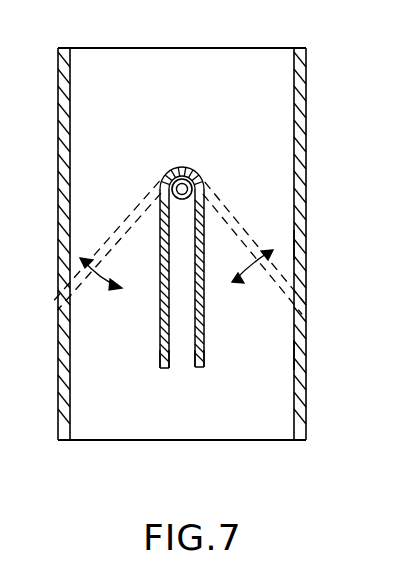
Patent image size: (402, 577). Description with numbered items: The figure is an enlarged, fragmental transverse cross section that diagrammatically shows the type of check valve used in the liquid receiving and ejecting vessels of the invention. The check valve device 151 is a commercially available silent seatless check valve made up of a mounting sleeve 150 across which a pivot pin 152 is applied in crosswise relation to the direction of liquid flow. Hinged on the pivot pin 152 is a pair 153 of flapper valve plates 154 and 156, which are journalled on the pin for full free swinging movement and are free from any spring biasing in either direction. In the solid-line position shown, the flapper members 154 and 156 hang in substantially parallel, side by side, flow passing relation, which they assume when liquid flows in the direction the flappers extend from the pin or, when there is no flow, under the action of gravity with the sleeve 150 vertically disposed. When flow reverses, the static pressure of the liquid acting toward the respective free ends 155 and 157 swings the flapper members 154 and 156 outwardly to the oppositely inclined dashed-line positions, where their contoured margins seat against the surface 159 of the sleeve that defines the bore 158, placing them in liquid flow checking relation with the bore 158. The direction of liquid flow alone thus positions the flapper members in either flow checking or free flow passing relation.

The mounting sleeve 150 is at (307, 158).
The check valve device 151 is at (338, 87).
The pivot pin 152 is at (190, 169).
The pair of flapper valve plates 153 is at (159, 406).
The flapper valve plate 154 is at (160, 242).
The free end 155 is at (161, 370).
The flapper valve plate 156 is at (203, 247).
The free end 157 is at (196, 373).
The bore 158 is at (293, 354).
The bore defining surface 159 is at (293, 252).